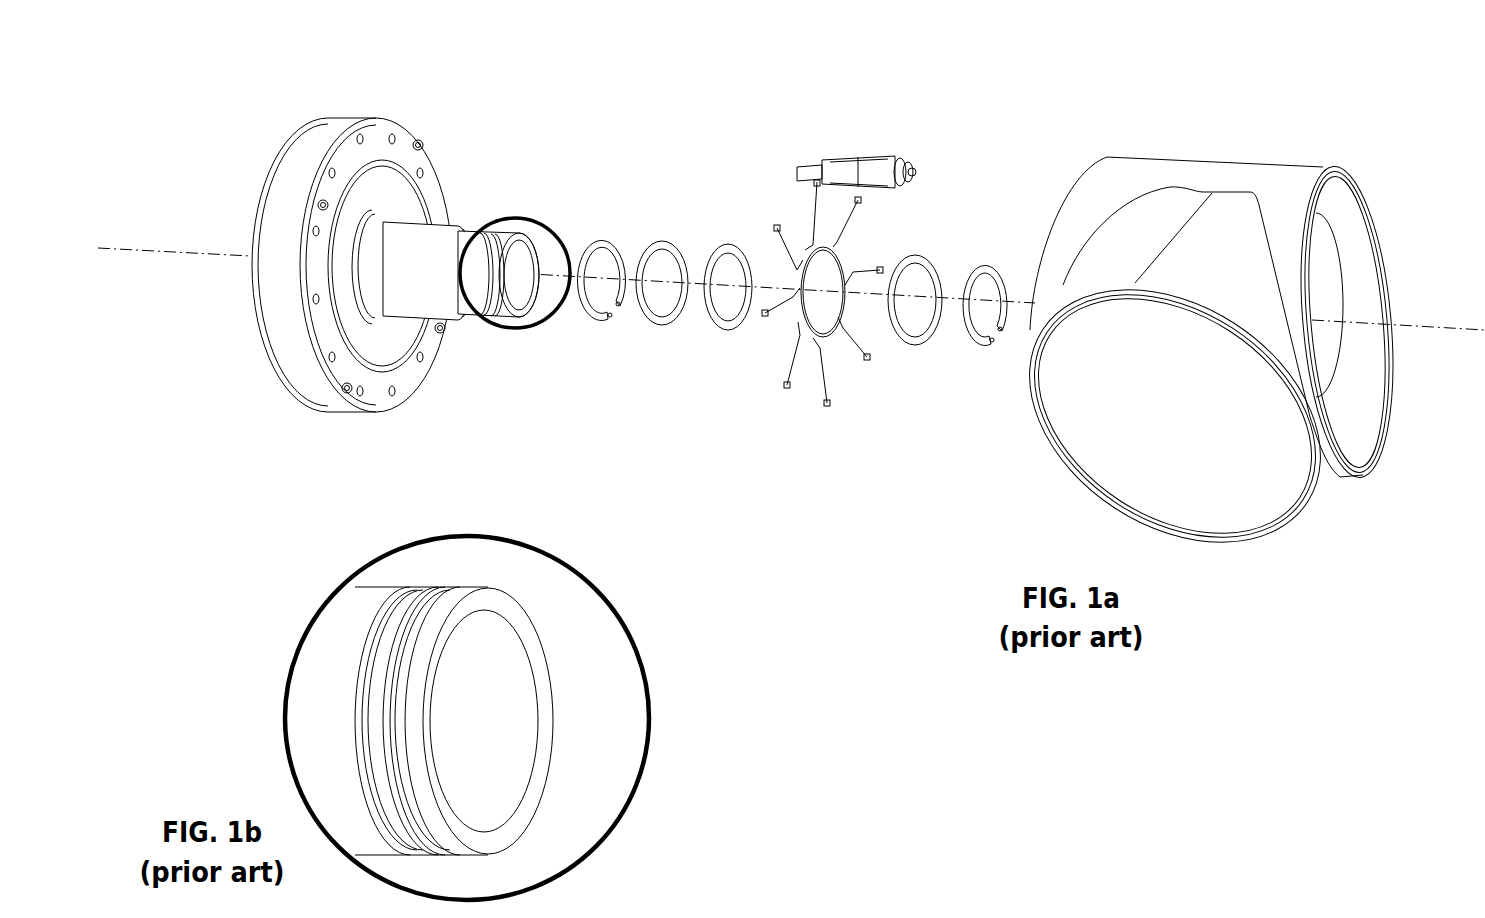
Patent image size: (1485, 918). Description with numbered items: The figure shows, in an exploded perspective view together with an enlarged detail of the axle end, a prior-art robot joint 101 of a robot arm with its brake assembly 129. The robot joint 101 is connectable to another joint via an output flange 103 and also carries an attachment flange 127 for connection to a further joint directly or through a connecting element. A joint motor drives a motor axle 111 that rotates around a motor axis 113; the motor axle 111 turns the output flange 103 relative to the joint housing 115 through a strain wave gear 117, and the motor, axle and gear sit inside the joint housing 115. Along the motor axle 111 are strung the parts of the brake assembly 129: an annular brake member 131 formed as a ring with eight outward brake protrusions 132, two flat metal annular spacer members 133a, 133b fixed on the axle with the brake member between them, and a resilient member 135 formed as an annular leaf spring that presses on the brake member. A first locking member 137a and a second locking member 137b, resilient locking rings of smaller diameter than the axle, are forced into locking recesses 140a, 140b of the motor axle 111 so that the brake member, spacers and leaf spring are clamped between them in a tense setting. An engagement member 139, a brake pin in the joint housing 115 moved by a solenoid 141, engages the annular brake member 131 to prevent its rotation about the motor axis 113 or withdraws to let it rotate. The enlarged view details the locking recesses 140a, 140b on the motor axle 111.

In FIG. 1a, the robot joint 101 is at (1300, 92).
In FIG. 1a, the output flange 103 is at (290, 133).
In FIG. 1a, the motor axle 111 is at (479, 224).
In FIG. 1b, the motor axle 111 is at (330, 668).
In FIG. 1a, the motor axis 113 is at (230, 253).
In FIG. 1a, the joint housing 115 is at (1162, 156).
In FIG. 1a, the strain wave gear 117 is at (275, 313).
In FIG. 1a, the attachment flange 127 is at (1233, 537).
In FIG. 1a, the brake assembly 129 is at (468, 80).
In FIG. 1a, the annular brake member 131 is at (782, 203).
In FIG. 1a, the brake protrusions 132 is at (814, 200).
In FIG. 1a, the annular spacer member 133a is at (661, 240).
In FIG. 1a, the annular spacer member 133b is at (897, 340).
In FIG. 1a, the resilient member 135 is at (725, 330).
In FIG. 1a, the first locking member 137a is at (598, 240).
In FIG. 1a, the second locking member 137b is at (970, 350).
In FIG. 1a, the engagement member 139 is at (907, 182).
In FIG. 1a, the locking recess 140a is at (478, 316).
In FIG. 1b, the locking recess 140a is at (407, 593).
In FIG. 1a, the locking recess 140b is at (494, 320).
In FIG. 1b, the locking recess 140b is at (433, 598).
In FIG. 1a, the solenoid 141 is at (874, 160).